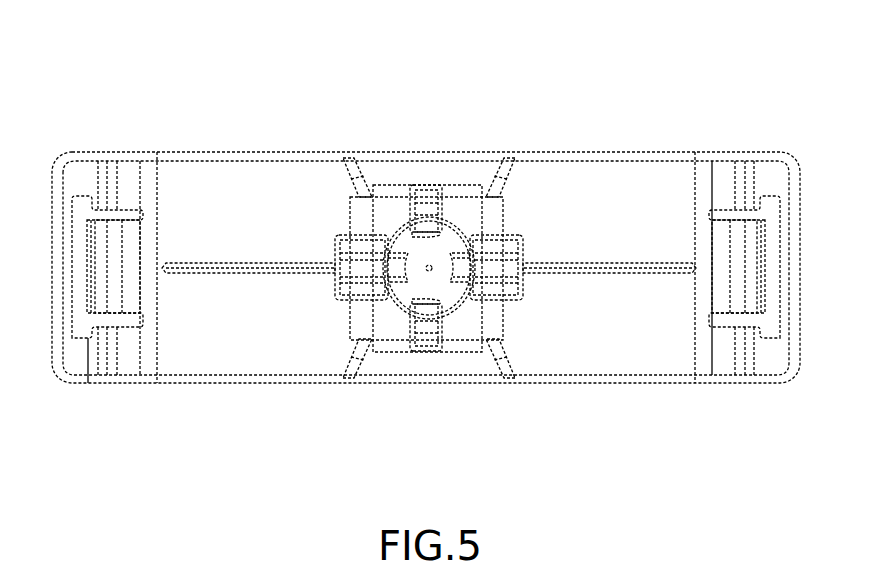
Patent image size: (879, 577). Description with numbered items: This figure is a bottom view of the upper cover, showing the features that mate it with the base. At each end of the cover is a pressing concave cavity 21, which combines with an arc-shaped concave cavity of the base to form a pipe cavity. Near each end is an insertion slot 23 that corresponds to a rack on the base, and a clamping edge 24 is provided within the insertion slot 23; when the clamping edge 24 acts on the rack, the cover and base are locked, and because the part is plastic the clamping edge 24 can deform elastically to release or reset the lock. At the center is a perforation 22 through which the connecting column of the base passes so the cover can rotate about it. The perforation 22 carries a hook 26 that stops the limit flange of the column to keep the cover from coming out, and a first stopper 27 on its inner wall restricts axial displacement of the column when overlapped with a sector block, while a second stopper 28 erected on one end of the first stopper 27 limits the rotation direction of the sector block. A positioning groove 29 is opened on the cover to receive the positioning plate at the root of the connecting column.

The pressing concave cavity 21 is at (236, 192).
The perforation 22 is at (433, 280).
The insertion slot 23 is at (79, 265).
The clamping edge 24 is at (757, 220).
The hook 26 is at (455, 253).
The first stopper 27 is at (410, 303).
The second stopper 28 is at (437, 280).
The positioning groove 29 is at (423, 203).